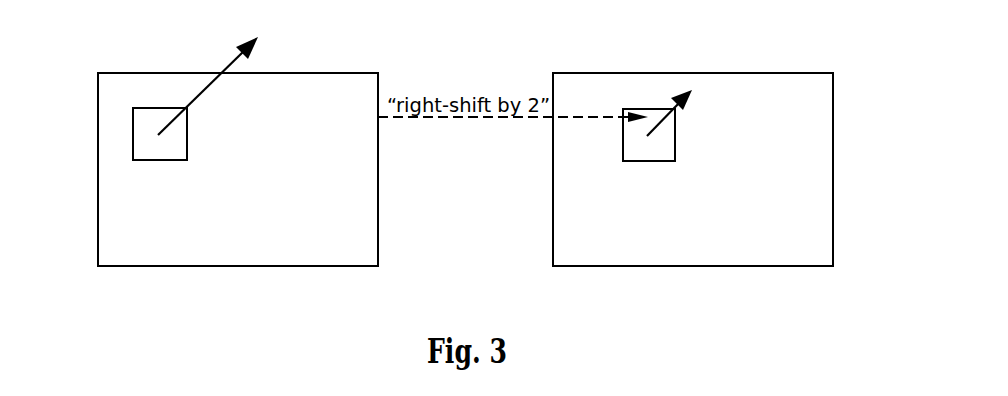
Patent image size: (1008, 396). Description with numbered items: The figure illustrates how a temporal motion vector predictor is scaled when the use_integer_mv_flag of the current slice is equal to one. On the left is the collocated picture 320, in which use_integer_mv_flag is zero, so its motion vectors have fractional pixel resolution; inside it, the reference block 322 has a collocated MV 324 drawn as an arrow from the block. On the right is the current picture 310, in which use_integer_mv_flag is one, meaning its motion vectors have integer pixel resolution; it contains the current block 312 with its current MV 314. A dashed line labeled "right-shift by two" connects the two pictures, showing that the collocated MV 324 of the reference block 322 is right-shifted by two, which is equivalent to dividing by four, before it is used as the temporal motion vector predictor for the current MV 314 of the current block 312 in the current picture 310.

The current picture 310 is at (833, 204).
The current block 312 is at (623, 161).
The current MV 314 is at (677, 110).
The collocated picture 320 is at (378, 204).
The reference block 322 is at (152, 161).
The collocated MV 324 is at (167, 128).